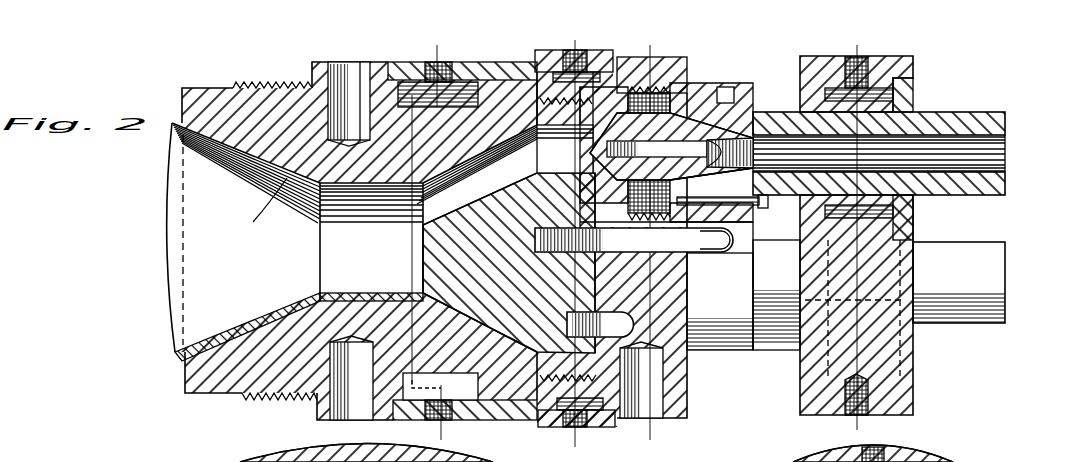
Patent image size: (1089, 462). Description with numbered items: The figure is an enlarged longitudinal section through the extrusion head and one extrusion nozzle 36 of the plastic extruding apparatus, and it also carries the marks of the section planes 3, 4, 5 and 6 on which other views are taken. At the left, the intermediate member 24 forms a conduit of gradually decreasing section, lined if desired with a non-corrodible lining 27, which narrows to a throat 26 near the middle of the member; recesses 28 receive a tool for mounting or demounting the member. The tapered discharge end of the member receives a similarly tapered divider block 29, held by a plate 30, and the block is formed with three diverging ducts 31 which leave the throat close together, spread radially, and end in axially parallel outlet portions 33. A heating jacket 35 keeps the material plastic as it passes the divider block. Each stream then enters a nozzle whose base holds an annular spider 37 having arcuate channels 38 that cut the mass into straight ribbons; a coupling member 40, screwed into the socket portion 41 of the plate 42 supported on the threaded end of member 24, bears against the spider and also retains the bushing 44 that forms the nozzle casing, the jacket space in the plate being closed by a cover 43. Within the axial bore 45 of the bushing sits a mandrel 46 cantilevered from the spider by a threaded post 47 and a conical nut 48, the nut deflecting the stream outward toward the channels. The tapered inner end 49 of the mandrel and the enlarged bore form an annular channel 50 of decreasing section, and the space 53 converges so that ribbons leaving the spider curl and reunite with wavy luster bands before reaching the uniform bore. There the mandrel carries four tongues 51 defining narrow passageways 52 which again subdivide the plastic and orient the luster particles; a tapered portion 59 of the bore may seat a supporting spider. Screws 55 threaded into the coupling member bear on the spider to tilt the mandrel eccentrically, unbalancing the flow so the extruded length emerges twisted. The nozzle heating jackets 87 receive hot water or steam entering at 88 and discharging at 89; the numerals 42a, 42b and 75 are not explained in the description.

The section line 3- 3 is at (448, 52).
The section line 4- 4 is at (588, 46).
The section line 5- 5 is at (662, 51).
The section line 6- 6 is at (869, 50).
The intermediate member 24 is at (236, 394).
The throat 26 is at (371, 242).
The non-corrodible lining 27 is at (243, 242).
The recesses 28 is at (320, 423).
The divider block 29 is at (437, 264).
The plate 30 is at (687, 369).
The diverging ducts 31 is at (480, 199).
The axially parallel outlet portion 33 is at (528, 160).
The heating jacket 35 is at (418, 398).
The extrusion nozzle 36 is at (949, 112).
The spider 37 is at (690, 99).
The arcuate channels 38 is at (657, 145).
The coupling member 40 is at (745, 90).
The socket portion 41 is at (727, 91).
The plate 42 is at (683, 95).
The passage 42a is at (707, 251).
The passage 42b is at (630, 320).
The cover 43 is at (565, 410).
The bushing 44 is at (1008, 118).
The axial bore 45 is at (1006, 137).
The mandrel 46 is at (743, 132).
The threaded post 47 is at (660, 150).
The nut 48 is at (565, 149).
The tapered inner end of mandrel 49 is at (690, 158).
The annular channel 50 is at (711, 179).
The tongues 51 is at (1006, 166).
The narrow passageways 52 is at (1006, 150).
The space 53 is at (913, 404).
The screws 55 is at (762, 208).
The tapered portion 59 is at (749, 171).
The threads 75 is at (289, 78).
The heating jackets 87 is at (915, 212).
The heating medium inlet 88 is at (800, 407).
The heating medium discharge 89 is at (906, 68).